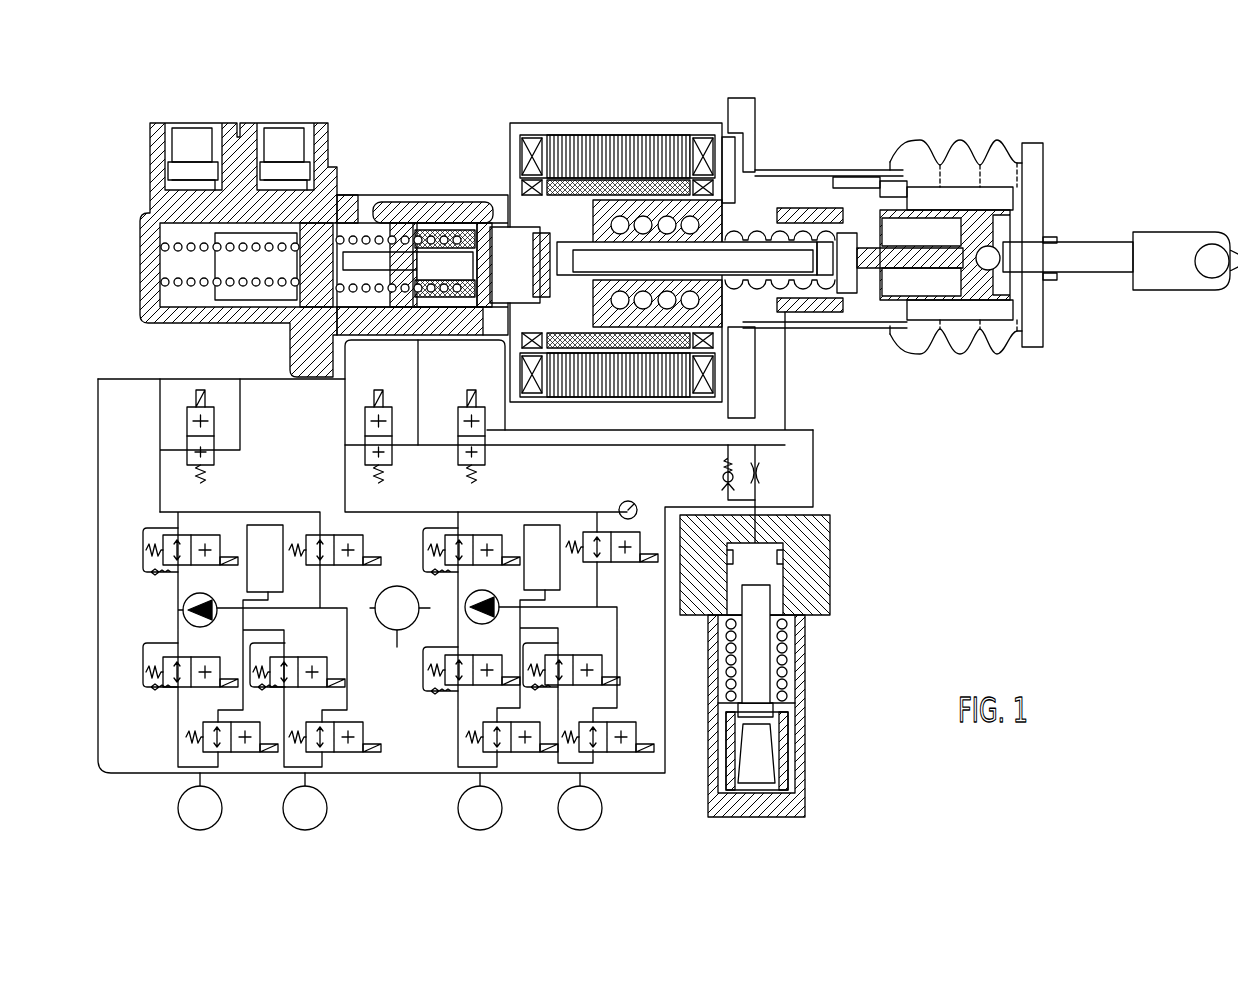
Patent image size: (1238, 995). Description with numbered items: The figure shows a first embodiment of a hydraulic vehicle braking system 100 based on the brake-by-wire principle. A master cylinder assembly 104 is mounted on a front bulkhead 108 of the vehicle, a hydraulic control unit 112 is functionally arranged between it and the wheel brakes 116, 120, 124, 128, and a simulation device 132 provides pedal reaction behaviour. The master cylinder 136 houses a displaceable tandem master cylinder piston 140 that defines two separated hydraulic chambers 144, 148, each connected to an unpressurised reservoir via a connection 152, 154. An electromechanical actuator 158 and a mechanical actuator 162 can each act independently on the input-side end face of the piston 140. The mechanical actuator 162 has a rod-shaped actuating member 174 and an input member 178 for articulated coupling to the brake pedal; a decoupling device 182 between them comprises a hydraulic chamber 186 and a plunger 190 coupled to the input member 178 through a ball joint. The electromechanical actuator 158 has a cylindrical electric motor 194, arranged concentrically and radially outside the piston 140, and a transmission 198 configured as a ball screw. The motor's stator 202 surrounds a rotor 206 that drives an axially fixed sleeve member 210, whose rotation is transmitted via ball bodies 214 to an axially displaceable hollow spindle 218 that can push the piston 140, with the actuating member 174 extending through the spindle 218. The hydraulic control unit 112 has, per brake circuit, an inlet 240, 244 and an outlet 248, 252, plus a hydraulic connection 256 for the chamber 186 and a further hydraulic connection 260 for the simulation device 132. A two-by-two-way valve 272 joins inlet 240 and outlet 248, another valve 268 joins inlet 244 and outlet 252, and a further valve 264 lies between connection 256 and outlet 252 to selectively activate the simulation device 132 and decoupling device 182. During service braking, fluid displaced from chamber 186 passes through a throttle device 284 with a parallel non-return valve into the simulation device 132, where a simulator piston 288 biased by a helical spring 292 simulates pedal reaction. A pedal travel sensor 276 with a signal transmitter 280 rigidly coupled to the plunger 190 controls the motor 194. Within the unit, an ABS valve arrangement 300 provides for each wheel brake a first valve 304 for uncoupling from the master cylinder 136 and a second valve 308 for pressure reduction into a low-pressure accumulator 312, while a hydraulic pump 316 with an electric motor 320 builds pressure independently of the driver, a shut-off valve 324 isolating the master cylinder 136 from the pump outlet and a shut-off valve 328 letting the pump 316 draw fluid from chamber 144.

The hydraulic vehicle braking system 100 is at (669, 273).
The master cylinder assembly 104 is at (423, 158).
The front bulkhead 108 is at (745, 120).
The hydraulic control unit 112 is at (100, 795).
The wheel brake 116 is at (216, 822).
The wheel brake 120 is at (327, 815).
The wheel brake 124 is at (502, 814).
The wheel brake 128 is at (602, 814).
The simulation device 132 is at (710, 810).
The master cylinder 136 is at (158, 207).
The master cylinder piston 140 is at (510, 227).
The hydraulic chamber 144 is at (180, 267).
The hydraulic chamber 148 is at (372, 233).
The connection 152 is at (195, 140).
The connection 154 is at (287, 143).
The electromechanical actuator 158 is at (660, 110).
The mechanical actuator 162 is at (942, 365).
The actuating member 174 is at (677, 135).
The input member 178 is at (1083, 280).
The decoupling device 182 is at (868, 156).
The hydraulic chamber 186 is at (860, 300).
The plunger 190 is at (968, 340).
The electric motor 194 is at (519, 110).
The transmission 198 is at (540, 150).
The stator 202 is at (573, 125).
The rotor 206 is at (630, 125).
The sleeve member 210 is at (705, 224).
The ball bodies 214 is at (712, 238).
The hollow spindle 218 is at (770, 300).
The inlet 240 is at (155, 379).
The inlet 244 is at (348, 379).
The outlet 248 is at (238, 379).
The outlet 252 is at (418, 379).
The hydraulic connection 256 is at (788, 430).
The hydraulic connection 260 is at (758, 507).
The 2/2-way valve 264 is at (487, 462).
The 2/2-way valve 268 is at (392, 462).
The 2/2-way valve 272 is at (215, 462).
The pedal travel sensor 276 is at (838, 148).
The signal transmitter 280 is at (897, 180).
The throttle device 284 is at (742, 494).
The simulator piston 288 is at (783, 580).
The helical spring 292 is at (805, 636).
The ABS valve arrangement 300 is at (415, 740).
The first valve 304 is at (228, 660).
The second valve 308 is at (205, 722).
The low-pressure accumulator 312 is at (288, 575).
The hydraulic pump 316 is at (205, 598).
The electric motor 320 is at (397, 648).
The shut-off valve 324 is at (187, 566).
The shut-off valve 328 is at (368, 562).